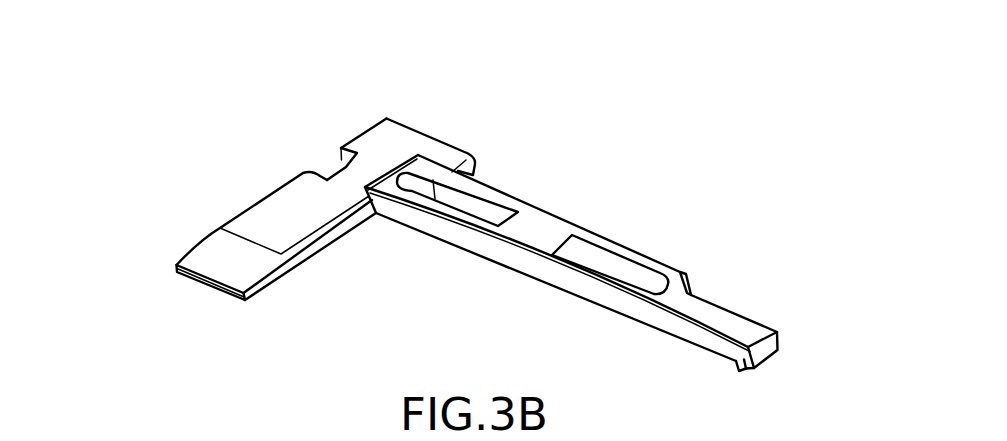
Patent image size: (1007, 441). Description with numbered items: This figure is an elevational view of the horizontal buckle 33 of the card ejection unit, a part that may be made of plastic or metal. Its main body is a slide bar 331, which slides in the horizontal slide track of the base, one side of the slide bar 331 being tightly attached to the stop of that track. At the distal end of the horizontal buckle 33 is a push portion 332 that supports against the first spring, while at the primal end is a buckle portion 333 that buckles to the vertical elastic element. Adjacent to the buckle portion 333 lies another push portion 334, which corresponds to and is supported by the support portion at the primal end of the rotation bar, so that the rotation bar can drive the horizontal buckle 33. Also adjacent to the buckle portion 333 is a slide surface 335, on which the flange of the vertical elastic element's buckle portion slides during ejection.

The horizontal buckle 33 is at (405, 143).
The slide bar 331 is at (465, 238).
The push portion 332 is at (773, 352).
The buckle portion 333 is at (334, 169).
The push portion 334 is at (362, 134).
The slide surface 335 is at (253, 203).